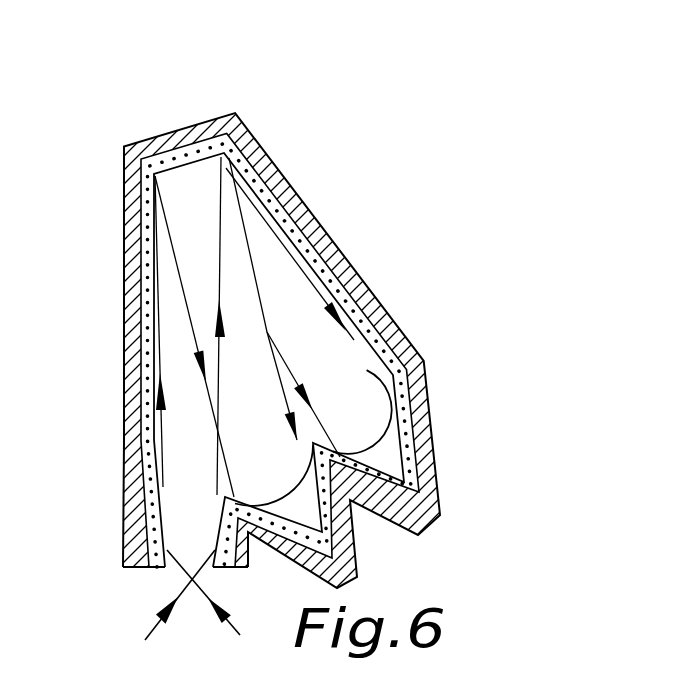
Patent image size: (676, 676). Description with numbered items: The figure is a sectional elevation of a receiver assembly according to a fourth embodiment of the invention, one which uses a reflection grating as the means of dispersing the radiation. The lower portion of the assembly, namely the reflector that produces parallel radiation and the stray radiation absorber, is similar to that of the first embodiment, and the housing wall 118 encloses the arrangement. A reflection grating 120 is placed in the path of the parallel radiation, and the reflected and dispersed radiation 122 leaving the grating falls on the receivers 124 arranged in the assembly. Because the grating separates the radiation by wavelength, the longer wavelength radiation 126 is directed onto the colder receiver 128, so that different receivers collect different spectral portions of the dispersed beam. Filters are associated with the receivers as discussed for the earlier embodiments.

The outer housing wall 118 is at (258, 172).
The reflection grating 120 is at (184, 153).
The reflected and dispersed radiation 122 is at (103, 480).
The receivers 124 is at (408, 428).
The longer wavelength radiation 126 is at (180, 257).
The colder receiver 128 is at (387, 442).